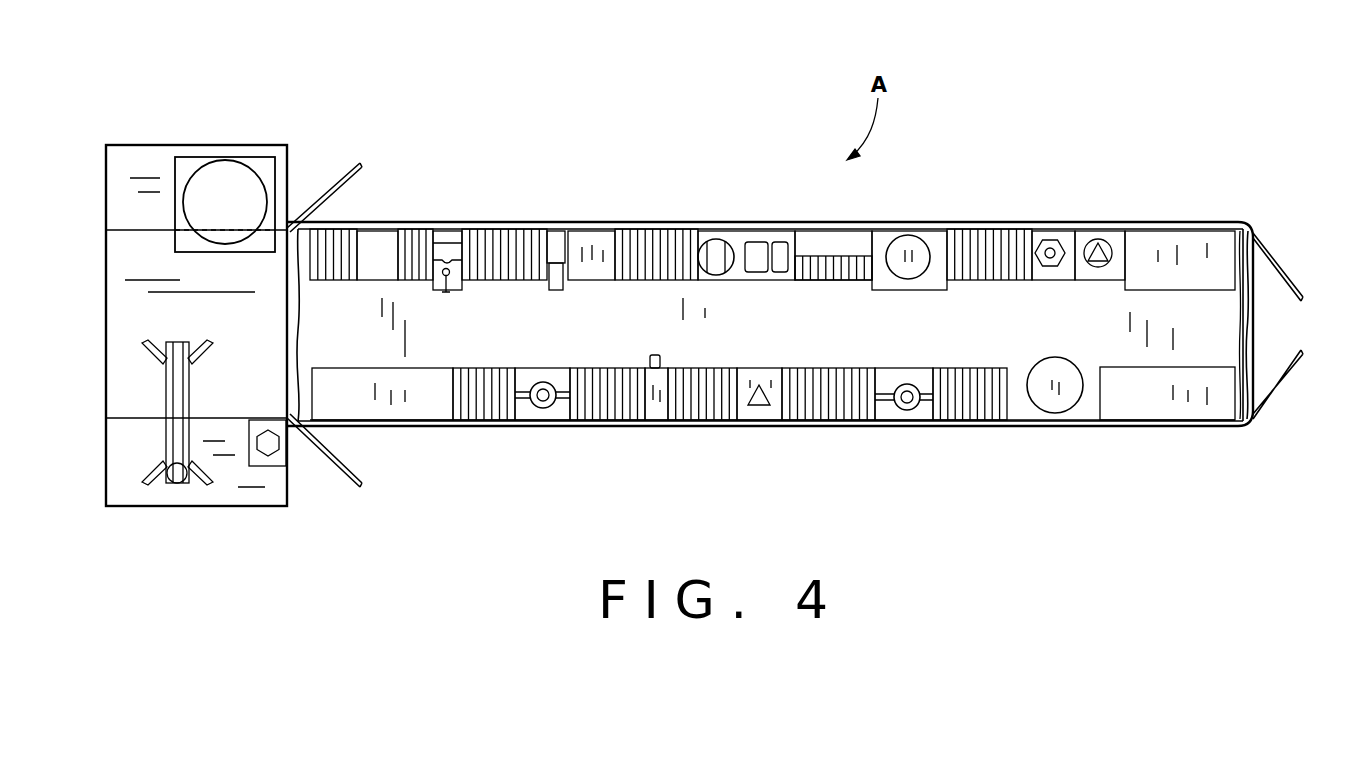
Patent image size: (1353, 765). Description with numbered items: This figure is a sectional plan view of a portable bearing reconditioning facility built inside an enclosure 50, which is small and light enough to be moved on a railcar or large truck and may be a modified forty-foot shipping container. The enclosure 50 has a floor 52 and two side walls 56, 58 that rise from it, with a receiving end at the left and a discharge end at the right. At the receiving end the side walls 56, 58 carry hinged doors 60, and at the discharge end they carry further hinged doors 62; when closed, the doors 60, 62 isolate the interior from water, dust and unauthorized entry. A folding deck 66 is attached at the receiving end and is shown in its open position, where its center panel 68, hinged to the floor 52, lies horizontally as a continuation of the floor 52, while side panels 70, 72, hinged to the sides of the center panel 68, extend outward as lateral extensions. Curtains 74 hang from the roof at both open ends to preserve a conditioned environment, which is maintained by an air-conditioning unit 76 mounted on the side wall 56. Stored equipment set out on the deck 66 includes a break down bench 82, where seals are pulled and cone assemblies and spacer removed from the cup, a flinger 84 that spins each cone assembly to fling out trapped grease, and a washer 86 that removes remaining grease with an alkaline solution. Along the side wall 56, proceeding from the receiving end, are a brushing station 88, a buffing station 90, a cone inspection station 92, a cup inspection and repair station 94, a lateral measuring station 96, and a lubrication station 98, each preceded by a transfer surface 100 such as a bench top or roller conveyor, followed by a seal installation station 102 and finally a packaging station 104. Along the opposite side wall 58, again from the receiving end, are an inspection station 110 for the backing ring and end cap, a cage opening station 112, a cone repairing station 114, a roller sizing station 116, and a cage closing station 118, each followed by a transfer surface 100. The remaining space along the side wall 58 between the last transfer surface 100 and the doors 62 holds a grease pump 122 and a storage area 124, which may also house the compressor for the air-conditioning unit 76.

The enclosure 50 is at (1243, 222).
The floor 52 is at (1228, 308).
The side wall 56 is at (604, 250).
The side wall 58 is at (423, 430).
The doors 60 is at (348, 170).
The doors 62 is at (1288, 275).
The deck 66 is at (104, 353).
The center panel 68 is at (145, 274).
The side panel 70 is at (128, 163).
The side panel 72 is at (130, 444).
The curtains 74 is at (290, 332).
The air-conditioning unit 76 is at (822, 247).
The break down bench 82 is at (176, 483).
The flinger 84 is at (268, 466).
The washer 86 is at (265, 160).
The brushing station 88 is at (373, 243).
The buffing station 90 is at (440, 243).
The cone inspection station 92 is at (548, 245).
The cup inspection and repair station 94 is at (738, 240).
The lateral measuring station 96 is at (930, 238).
The lubrication station 98 is at (1050, 238).
The transfer surface 100 is at (495, 245).
The seal installation station 102 is at (1113, 240).
The packaging station 104 is at (1197, 247).
The inspection station 110 is at (365, 405).
The cage opening station 112 is at (558, 423).
The cone repairing station 114 is at (655, 423).
The roller sizing station 116 is at (760, 412).
The cage closing station 118 is at (916, 422).
The grease pump 122 is at (1058, 402).
The storage area 124 is at (1228, 413).